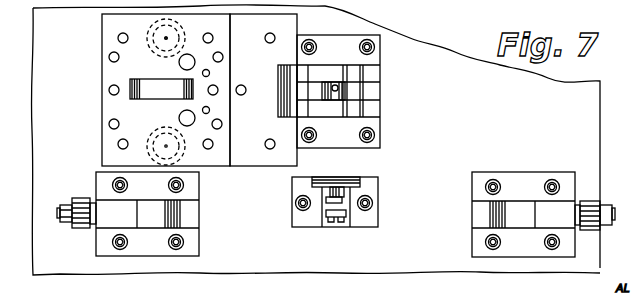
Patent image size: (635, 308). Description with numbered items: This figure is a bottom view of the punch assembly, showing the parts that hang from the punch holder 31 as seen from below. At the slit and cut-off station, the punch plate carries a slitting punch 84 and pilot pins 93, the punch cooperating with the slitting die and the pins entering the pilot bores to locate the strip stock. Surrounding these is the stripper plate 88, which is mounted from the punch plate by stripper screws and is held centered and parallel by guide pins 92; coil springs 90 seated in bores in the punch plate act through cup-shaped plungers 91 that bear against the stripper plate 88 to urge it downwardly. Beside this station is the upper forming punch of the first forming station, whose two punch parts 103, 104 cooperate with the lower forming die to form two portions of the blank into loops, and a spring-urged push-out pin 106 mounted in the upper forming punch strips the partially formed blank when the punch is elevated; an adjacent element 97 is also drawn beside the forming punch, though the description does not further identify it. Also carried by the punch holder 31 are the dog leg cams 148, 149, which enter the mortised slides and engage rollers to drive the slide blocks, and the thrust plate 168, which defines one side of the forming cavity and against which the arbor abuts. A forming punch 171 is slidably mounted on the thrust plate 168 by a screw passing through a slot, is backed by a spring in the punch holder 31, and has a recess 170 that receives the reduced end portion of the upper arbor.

The punch holder 31 is at (600, 128).
The slitting punch 84 is at (172, 93).
The stripper plate 88 is at (222, 166).
The coil springs 90 is at (182, 30).
The cup-shaped plungers 91 is at (150, 30).
The guide pins 92 is at (110, 123).
The pilot pins 93 is at (210, 109).
The slide member 97 is at (279, 110).
The punch part 103 is at (355, 73).
The punch part 104 is at (368, 110).
The push-out pin 106 is at (370, 88).
The dog leg cam 148 is at (152, 222).
The dog leg cam 149 is at (518, 207).
The thrust plate 168 is at (354, 178).
The recess 170 is at (348, 205).
The forming punch 171 is at (346, 193).